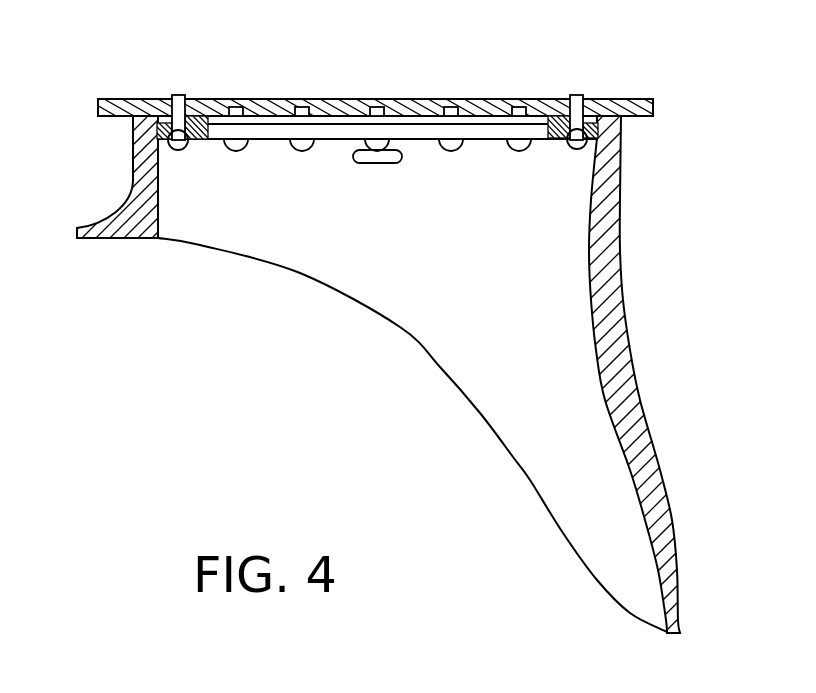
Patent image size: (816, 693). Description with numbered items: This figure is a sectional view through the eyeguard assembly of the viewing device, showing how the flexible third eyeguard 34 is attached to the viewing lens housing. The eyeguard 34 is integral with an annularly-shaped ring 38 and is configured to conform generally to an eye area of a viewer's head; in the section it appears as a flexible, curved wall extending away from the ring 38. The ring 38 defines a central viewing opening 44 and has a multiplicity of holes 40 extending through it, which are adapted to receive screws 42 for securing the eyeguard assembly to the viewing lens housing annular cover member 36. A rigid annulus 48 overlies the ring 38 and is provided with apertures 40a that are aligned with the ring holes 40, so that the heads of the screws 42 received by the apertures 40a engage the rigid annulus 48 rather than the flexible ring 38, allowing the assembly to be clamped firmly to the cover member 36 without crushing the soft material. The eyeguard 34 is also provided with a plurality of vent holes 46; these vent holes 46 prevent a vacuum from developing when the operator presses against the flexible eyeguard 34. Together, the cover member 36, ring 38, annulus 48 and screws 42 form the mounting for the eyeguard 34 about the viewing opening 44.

The third eyeguard 34 is at (220, 250).
The viewing lens housing annular cover member 36 is at (114, 99).
The annularly-shaped ring 38 is at (193, 116).
The holes 40 is at (178, 150).
The apertures 40a is at (157, 135).
The screws 42 is at (172, 95).
The central viewing opening 44 is at (237, 107).
The vent holes 46 is at (377, 165).
The rigid annulus 48 is at (267, 143).